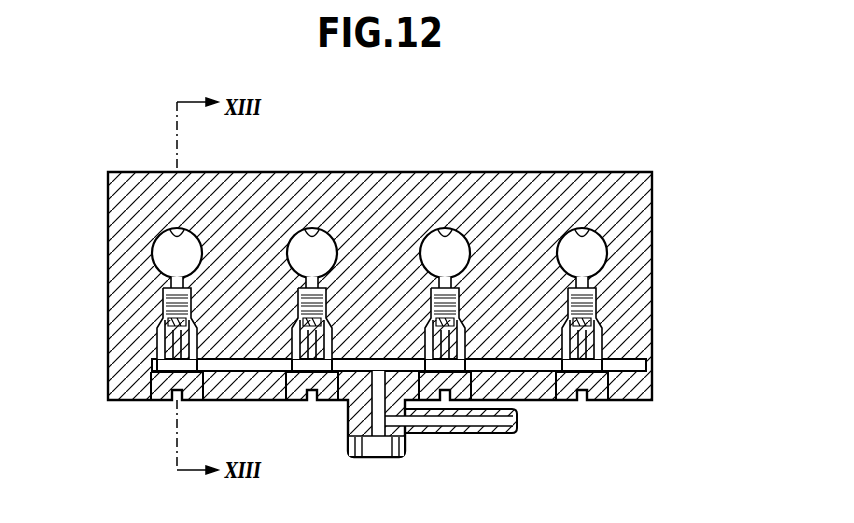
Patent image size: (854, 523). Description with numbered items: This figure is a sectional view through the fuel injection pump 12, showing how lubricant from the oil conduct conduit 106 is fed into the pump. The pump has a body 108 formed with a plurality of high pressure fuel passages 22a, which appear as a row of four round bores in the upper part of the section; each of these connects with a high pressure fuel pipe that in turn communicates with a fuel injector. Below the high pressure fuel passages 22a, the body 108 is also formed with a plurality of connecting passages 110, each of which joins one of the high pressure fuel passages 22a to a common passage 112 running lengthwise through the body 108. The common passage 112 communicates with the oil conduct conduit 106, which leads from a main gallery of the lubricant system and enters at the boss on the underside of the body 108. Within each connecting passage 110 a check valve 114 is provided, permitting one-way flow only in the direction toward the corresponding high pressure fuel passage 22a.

The fuel injection pump 12 is at (665, 220).
The high pressure fuel passage 22a is at (179, 239).
The oil conduct conduit 106 is at (447, 435).
The body 108 is at (653, 285).
The connecting passage 110 is at (295, 320).
The common passage 112 is at (542, 371).
The check valve 114 is at (157, 348).